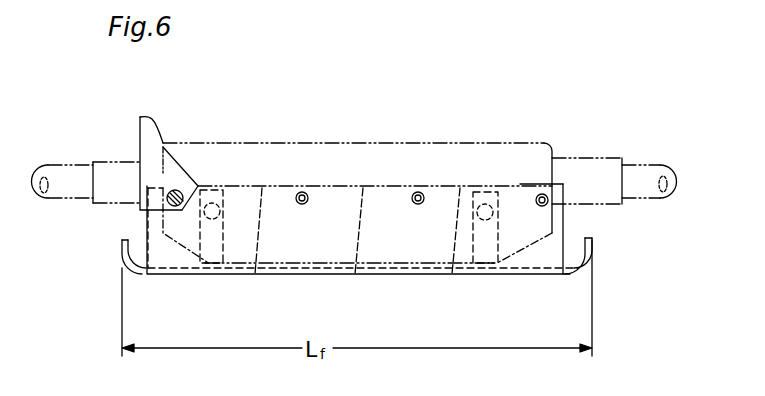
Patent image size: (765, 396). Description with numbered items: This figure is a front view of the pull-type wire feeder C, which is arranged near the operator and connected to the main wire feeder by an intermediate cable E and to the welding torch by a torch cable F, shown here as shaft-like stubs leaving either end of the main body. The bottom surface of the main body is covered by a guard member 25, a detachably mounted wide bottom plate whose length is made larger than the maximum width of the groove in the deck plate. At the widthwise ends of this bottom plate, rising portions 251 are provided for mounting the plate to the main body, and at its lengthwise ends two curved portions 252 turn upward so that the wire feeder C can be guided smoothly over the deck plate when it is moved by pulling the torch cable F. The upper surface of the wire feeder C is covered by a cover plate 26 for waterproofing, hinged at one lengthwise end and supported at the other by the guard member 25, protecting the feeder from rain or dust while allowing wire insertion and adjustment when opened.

The torch cable F is at (80, 170).
The intermediate cable E is at (636, 168).
The wire feeder C is at (523, 148).
The cover plate 26 is at (150, 127).
The guard member 25 is at (405, 274).
The rising portion 251 is at (564, 226).
The curved portion 252 is at (120, 246).